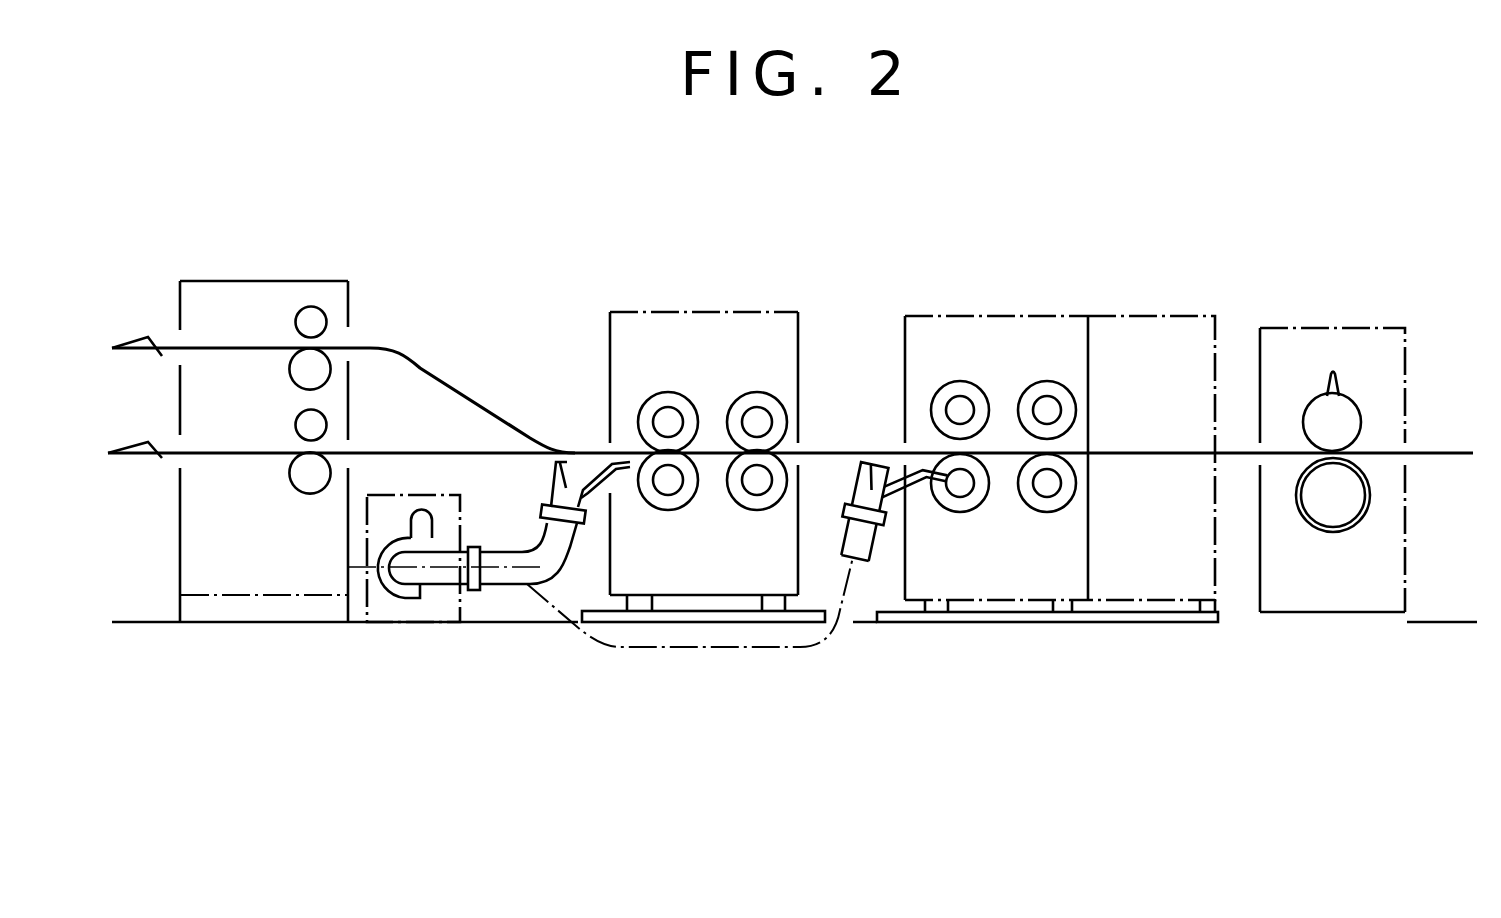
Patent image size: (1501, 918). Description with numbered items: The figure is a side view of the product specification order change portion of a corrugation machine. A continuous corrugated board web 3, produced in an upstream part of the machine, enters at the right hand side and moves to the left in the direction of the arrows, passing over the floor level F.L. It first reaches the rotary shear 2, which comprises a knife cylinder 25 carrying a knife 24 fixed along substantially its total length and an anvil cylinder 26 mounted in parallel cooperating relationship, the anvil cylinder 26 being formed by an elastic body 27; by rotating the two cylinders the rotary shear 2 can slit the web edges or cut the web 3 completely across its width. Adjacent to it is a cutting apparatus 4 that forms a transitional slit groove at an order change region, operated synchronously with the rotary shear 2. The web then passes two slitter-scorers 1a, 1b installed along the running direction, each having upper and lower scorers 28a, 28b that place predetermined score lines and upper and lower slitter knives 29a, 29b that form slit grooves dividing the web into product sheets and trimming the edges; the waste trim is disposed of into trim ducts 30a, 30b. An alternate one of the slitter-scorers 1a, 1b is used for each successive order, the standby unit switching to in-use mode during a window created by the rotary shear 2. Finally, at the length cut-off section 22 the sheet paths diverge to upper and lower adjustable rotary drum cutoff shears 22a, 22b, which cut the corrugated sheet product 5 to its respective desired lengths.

The slitter-scorer section 1a is at (647, 318).
The slitter-scorer section 1b is at (933, 318).
The rotary shear section 2 is at (1373, 330).
The continuous corrugated board web 3 is at (1445, 456).
The cutting apparatus 4 is at (1173, 320).
The corrugated sheet product 5 is at (198, 349).
The length cut-off section 22 is at (279, 291).
The adjustable rotary drum cutoff shear 22a is at (334, 331).
The adjustable rotary drum cutoff shear 22b is at (334, 437).
The knife 24 is at (1328, 383).
The knife cylinder 25 is at (1347, 410).
The anvil cylinder 26 is at (1352, 507).
The elastic body 27 is at (1313, 532).
The upper scorer 28a is at (760, 398).
The lower scorer 28b is at (1070, 403).
The upper slitter knife 29a is at (662, 403).
The lower slitter knife 29b is at (972, 387).
The trim duct 30a is at (575, 470).
The trim duct 30b is at (863, 487).
The floor level F.L is at (1443, 623).